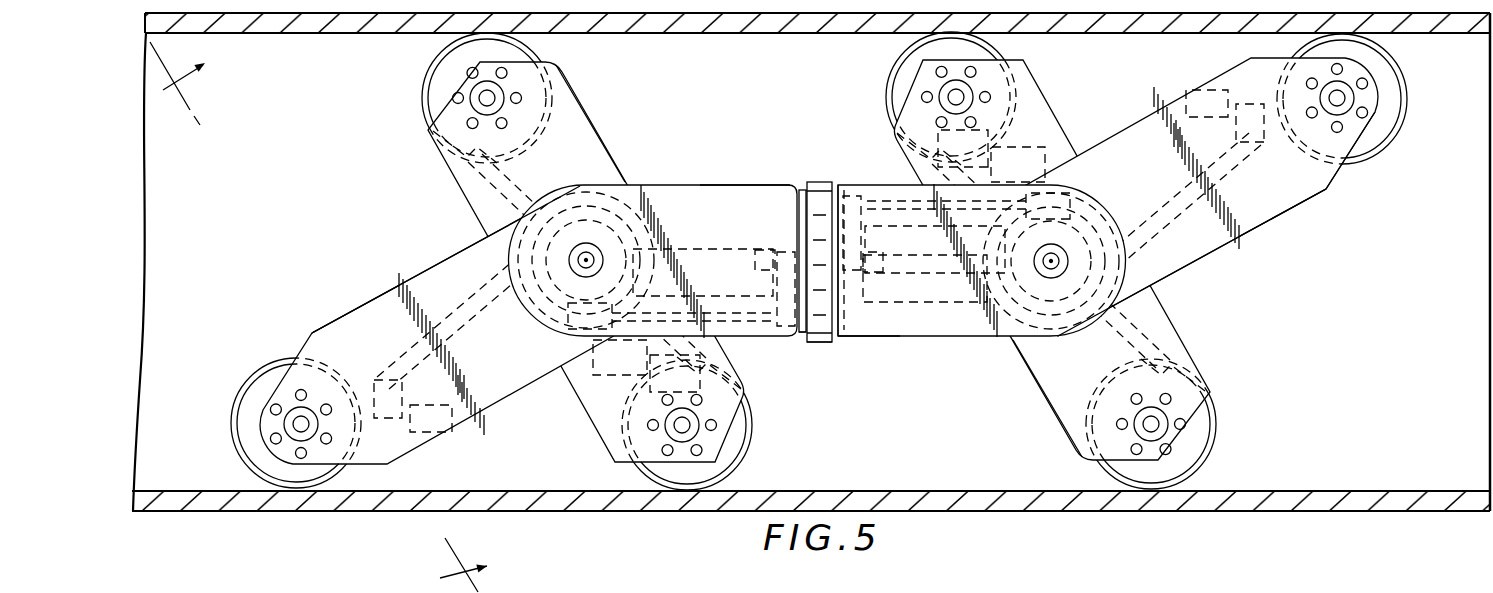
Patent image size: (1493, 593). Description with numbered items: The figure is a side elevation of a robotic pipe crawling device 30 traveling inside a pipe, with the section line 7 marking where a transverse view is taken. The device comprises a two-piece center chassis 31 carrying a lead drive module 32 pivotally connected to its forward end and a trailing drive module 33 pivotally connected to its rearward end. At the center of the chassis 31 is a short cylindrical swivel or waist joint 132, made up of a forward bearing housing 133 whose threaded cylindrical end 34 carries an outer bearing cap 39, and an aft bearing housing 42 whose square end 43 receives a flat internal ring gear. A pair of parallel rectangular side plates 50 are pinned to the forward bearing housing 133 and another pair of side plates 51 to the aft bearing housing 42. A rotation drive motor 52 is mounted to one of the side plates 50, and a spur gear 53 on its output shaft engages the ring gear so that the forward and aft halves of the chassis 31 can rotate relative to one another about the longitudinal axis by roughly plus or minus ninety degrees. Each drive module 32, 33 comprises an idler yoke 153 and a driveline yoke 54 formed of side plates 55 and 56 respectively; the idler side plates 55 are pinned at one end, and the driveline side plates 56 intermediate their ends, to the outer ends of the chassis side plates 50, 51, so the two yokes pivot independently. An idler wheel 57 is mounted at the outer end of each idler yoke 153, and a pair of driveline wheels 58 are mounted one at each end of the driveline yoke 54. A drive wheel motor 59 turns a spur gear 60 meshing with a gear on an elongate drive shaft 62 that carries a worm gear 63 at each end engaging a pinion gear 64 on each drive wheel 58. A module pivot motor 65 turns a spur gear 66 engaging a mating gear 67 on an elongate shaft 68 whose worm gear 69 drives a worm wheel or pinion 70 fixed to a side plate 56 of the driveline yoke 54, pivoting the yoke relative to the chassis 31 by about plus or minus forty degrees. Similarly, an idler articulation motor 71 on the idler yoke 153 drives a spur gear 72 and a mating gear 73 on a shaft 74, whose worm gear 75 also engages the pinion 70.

The section line 7- 7 is at (316, 317).
The robotic pipe crawling device 30 is at (778, 92).
The two-piece center chassis 31 is at (876, 345).
The lead drive module 32 is at (1344, 235).
The trailing drive module 33 is at (302, 172).
The cylindrical end of forward bearing housing 34 is at (841, 337).
The cylindrical outer bearing cap 39 is at (821, 343).
The aft bearing housing 42 is at (799, 190).
The square end of aft bearing housing 43 is at (801, 342).
The forward side plates 50 is at (972, 338).
The aft side plates 51 is at (735, 185).
The rotation drive motor 52 is at (908, 336).
The spur gear 53 is at (820, 262).
The driveline yoke 54 is at (588, 82).
The idler side plates 55 is at (381, 296).
The driveline side plates 56 is at (595, 137).
The idler wheel 57 is at (244, 384).
The driveline wheels 58 is at (427, 76).
The drive wheel motor 59 is at (592, 372).
The spur gear 60 is at (645, 392).
The tie rod 62 is at (508, 180).
The worm gear 63 is at (430, 131).
The worm wheel or pinion gear 64 is at (516, 86).
The module pivot motor 65 is at (707, 247).
The spur gear 66 is at (765, 250).
The mating gear 67 is at (861, 197).
The elongate shaft 68 is at (726, 311).
The worm gear 69 is at (543, 340).
The worm wheel or pinion 70 is at (630, 178).
The idler articulation motor 71 is at (412, 290).
The spur gear 72 is at (380, 380).
The mating gear 73 is at (445, 412).
The elongate shaft 74 is at (476, 392).
The worm gear 75 is at (535, 235).
The waist joint 132 is at (819, 178).
The forward bearing housing 133 is at (845, 185).
The idler yoke 153 is at (346, 310).